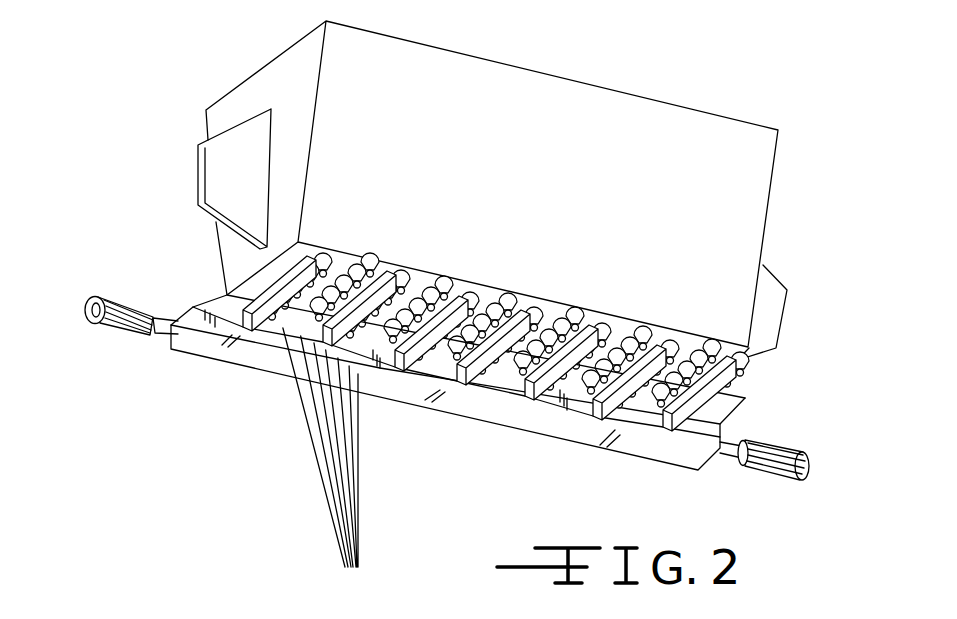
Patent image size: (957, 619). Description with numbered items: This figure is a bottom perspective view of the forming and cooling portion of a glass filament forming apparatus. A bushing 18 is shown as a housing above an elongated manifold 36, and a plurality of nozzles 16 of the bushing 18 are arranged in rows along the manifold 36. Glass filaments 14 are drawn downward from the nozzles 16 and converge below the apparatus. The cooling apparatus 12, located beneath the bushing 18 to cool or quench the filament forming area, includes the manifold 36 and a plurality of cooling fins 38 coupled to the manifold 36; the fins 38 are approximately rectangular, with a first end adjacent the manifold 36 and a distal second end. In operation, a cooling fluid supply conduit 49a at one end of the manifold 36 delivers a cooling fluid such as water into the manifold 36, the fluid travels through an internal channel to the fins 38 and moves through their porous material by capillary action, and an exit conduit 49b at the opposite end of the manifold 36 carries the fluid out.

The cooling apparatus 12 is at (459, 288).
The filaments 14 is at (358, 499).
The nozzles 16 is at (443, 302).
The bushing 18 is at (668, 90).
The manifold 36 is at (254, 362).
The cooling fins 38 is at (597, 323).
The cooling fluid supply conduit 49a is at (78, 303).
The exit conduit 49b is at (852, 481).